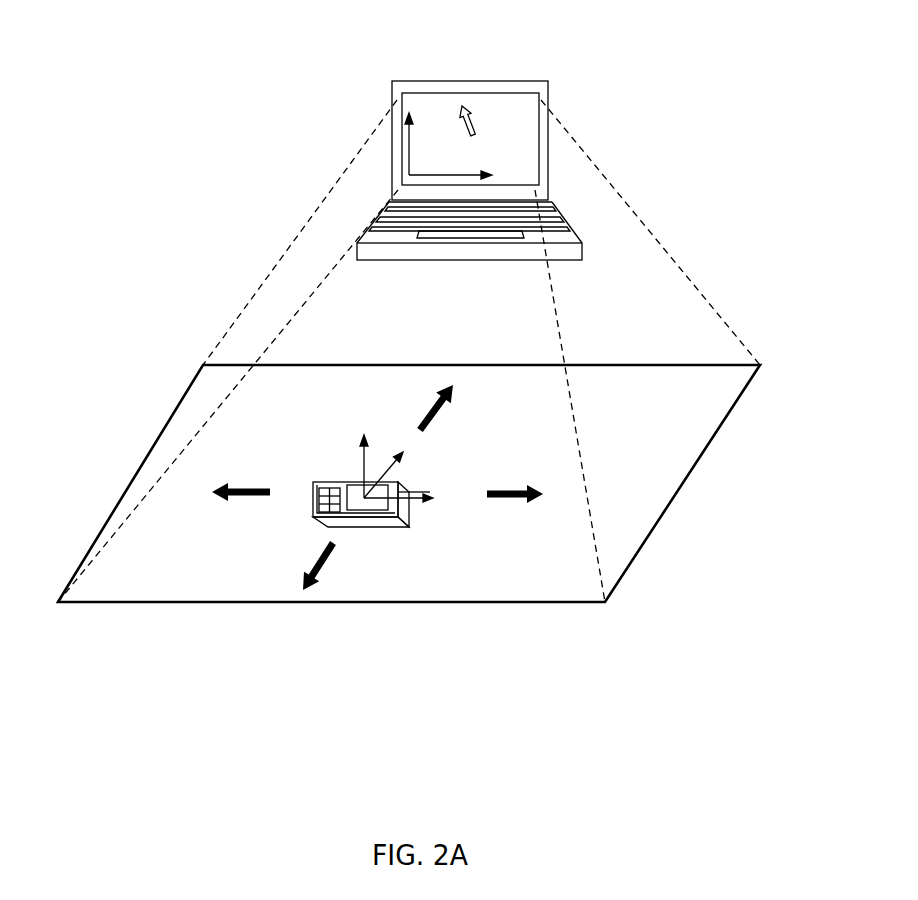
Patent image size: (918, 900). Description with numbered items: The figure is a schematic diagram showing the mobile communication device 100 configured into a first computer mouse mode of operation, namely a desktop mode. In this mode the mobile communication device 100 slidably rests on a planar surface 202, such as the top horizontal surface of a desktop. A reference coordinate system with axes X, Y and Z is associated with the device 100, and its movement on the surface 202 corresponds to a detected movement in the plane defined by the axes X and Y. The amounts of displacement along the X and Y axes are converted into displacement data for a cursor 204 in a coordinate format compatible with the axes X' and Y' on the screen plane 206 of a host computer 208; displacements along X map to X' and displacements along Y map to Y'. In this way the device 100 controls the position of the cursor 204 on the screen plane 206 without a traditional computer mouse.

The mobile communication device 100 is at (380, 528).
The planar surface 202 is at (187, 603).
The cursor 204 is at (476, 114).
The screen plane 206 is at (539, 153).
The host computer 208 is at (381, 64).